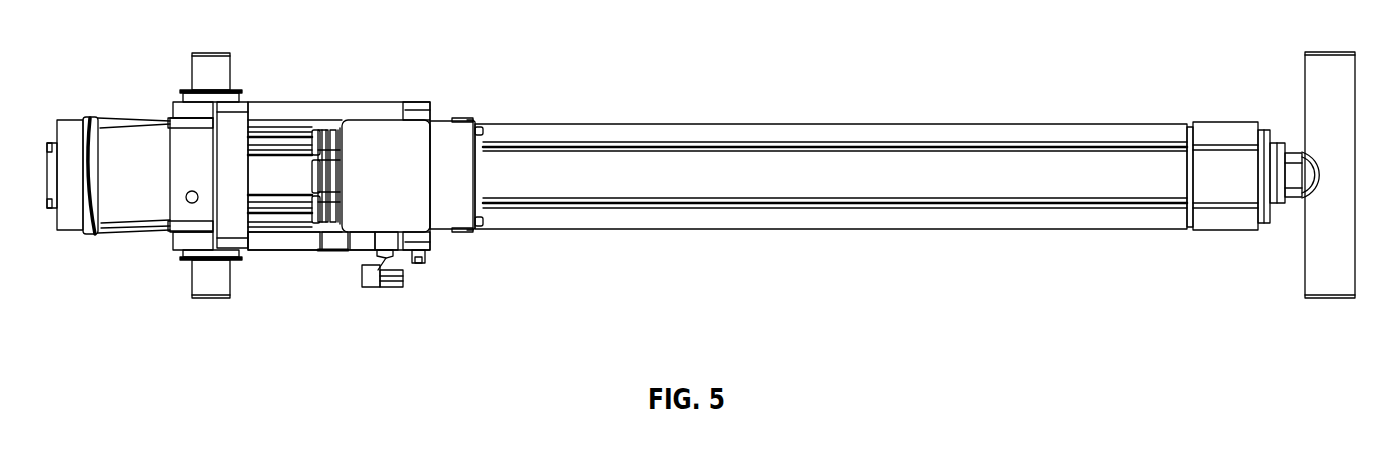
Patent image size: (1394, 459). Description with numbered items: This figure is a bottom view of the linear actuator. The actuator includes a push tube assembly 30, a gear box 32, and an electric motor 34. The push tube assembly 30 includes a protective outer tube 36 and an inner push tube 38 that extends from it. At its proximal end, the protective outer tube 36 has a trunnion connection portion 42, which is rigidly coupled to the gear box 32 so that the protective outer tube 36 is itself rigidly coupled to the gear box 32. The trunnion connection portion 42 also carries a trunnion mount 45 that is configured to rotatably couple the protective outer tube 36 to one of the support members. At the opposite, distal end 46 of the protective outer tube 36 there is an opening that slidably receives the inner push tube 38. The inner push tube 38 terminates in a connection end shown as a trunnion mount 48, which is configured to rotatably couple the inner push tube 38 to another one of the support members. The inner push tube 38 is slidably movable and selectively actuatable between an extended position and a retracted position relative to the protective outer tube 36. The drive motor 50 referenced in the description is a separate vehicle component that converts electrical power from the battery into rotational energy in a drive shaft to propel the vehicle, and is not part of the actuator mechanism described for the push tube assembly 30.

The push tube assembly 30 is at (1036, 73).
The gear box 32 is at (146, 173).
The trunnion connection portion 42 is at (187, 173).
The trunnion mount 45 is at (213, 78).
The electric motor 34 is at (358, 170).
The drive motor 50 is at (455, 208).
The protective outer tube 36 is at (710, 170).
The distal end 46 is at (1265, 133).
The inner push tube 38 is at (1293, 198).
The trunnion mount 48 is at (1338, 263).